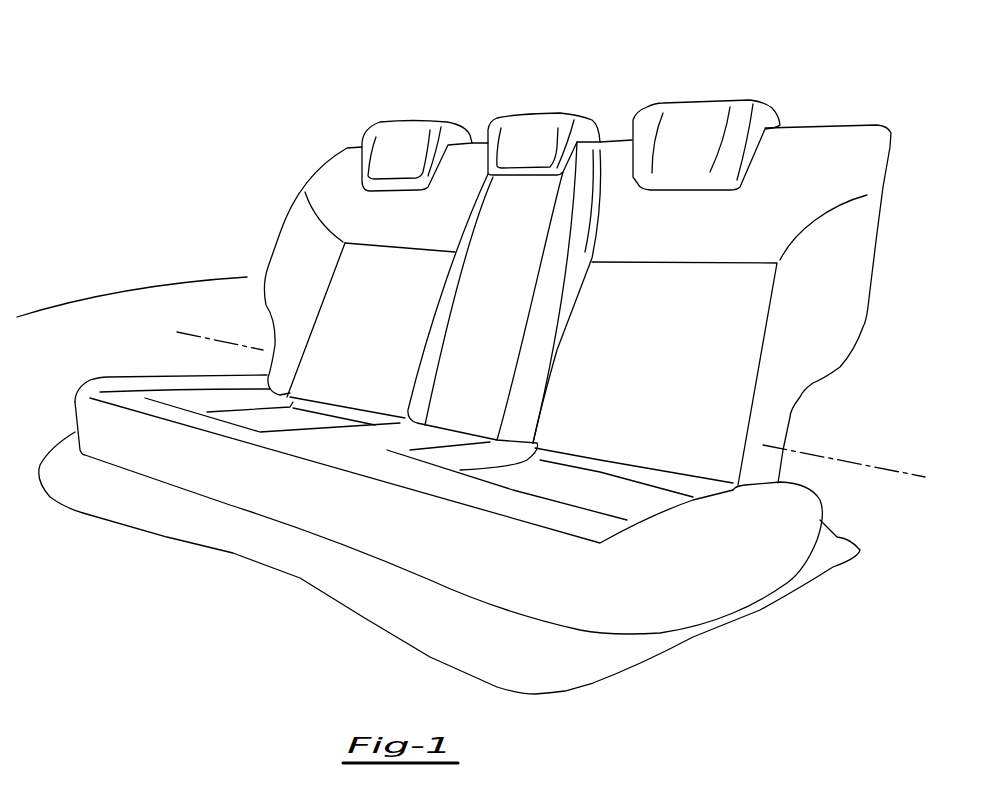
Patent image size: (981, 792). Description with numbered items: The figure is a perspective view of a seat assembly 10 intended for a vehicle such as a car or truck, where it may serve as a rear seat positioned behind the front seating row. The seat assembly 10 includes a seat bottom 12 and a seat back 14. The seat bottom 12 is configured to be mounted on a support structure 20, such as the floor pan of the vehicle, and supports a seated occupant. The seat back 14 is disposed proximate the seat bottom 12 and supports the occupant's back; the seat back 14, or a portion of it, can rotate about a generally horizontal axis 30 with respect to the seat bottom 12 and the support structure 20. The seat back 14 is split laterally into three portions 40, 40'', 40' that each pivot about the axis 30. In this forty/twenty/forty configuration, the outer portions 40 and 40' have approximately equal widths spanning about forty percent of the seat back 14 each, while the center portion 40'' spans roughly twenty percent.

The seat assembly 10 is at (262, 208).
The seat bottom 12 is at (763, 572).
The seat back 14 is at (853, 163).
The support structure 20 is at (683, 650).
The axis 30 is at (857, 463).
The portion 40 is at (402, 124).
The portion 40' is at (706, 115).
The portion 40'' is at (547, 111).